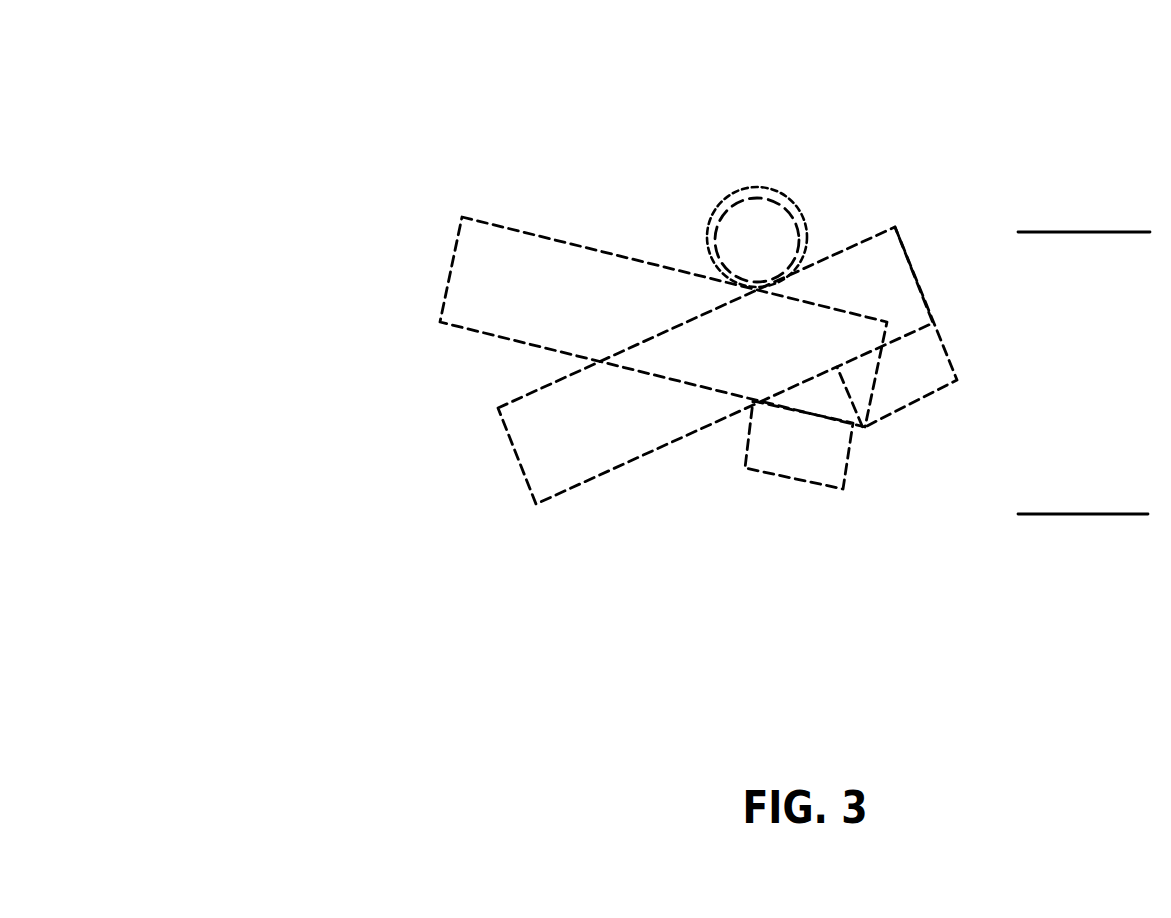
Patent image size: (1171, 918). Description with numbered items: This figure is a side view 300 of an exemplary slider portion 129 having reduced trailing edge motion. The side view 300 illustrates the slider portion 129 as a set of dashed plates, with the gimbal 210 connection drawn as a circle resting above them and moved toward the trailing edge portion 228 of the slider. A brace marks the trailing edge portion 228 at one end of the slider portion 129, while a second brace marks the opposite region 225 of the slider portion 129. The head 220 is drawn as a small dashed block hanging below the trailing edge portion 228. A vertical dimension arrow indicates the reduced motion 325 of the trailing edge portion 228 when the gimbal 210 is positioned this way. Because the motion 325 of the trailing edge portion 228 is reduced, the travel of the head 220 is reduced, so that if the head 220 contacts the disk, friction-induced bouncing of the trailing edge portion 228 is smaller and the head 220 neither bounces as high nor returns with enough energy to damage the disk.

The side view 300 is at (582, 48).
The slider portion 129 is at (545, 440).
The gimbal 210 is at (743, 203).
The head 220 is at (845, 475).
The first panel portion 225 is at (273, 545).
The trailing edge portion 228 is at (862, 563).
The reduced motion 325 is at (1088, 514).